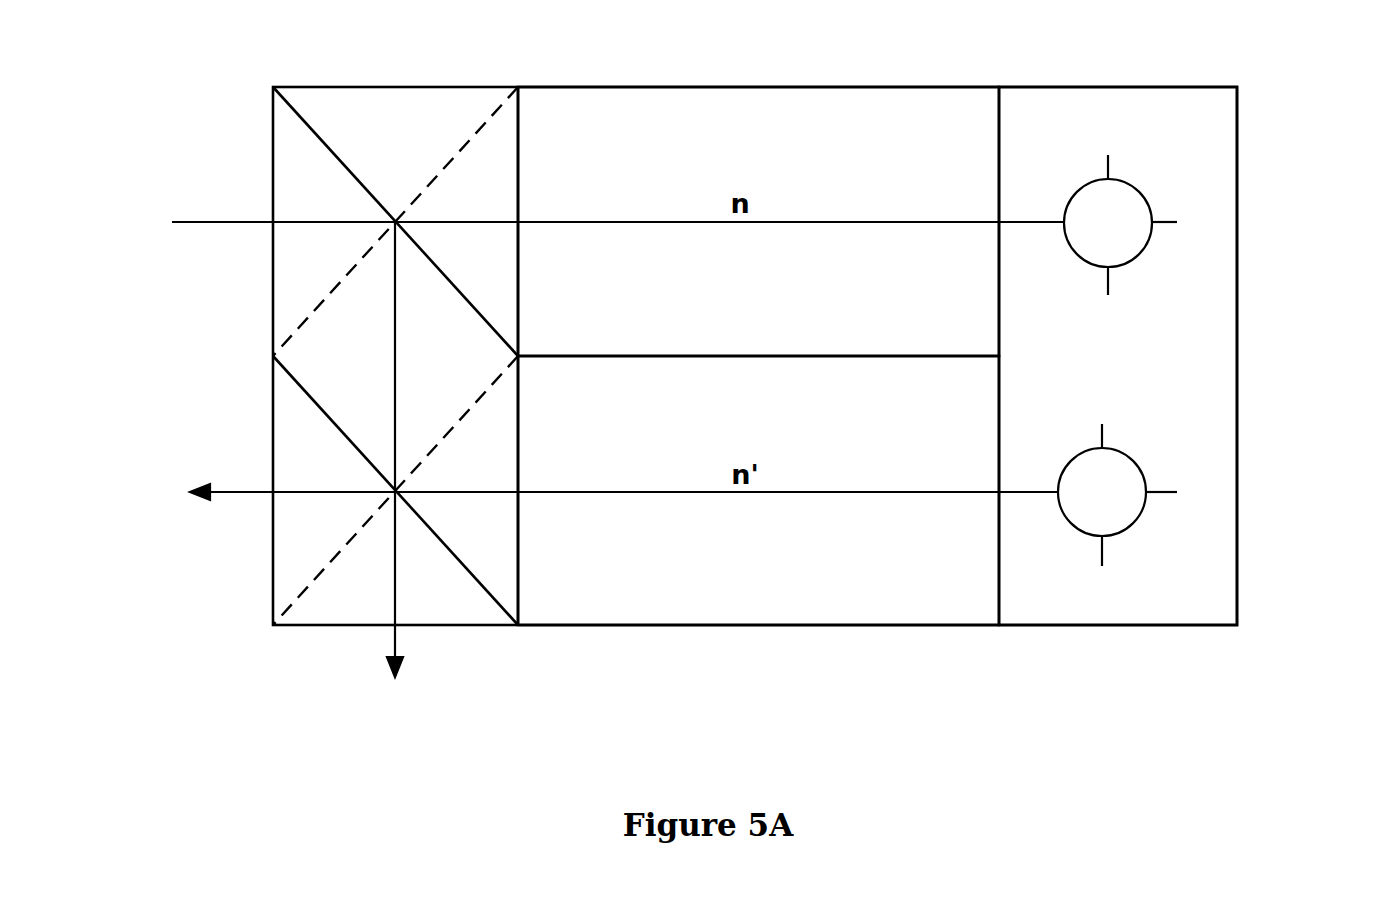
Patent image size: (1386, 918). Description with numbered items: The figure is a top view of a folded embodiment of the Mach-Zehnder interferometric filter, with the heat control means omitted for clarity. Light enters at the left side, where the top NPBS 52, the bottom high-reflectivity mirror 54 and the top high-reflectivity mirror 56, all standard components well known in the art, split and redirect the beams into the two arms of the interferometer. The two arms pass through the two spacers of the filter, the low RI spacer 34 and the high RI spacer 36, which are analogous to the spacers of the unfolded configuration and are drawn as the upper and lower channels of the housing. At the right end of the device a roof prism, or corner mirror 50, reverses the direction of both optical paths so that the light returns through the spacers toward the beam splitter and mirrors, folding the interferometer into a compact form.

The low RI spacer 34 is at (700, 123).
The high RI spacer 36 is at (678, 600).
The corner mirror 50 is at (1176, 372).
The top NPBS 52 is at (312, 150).
The bottom high-reflectivity mirror 54 is at (290, 306).
The top high-reflectivity mirror 56 is at (312, 427).